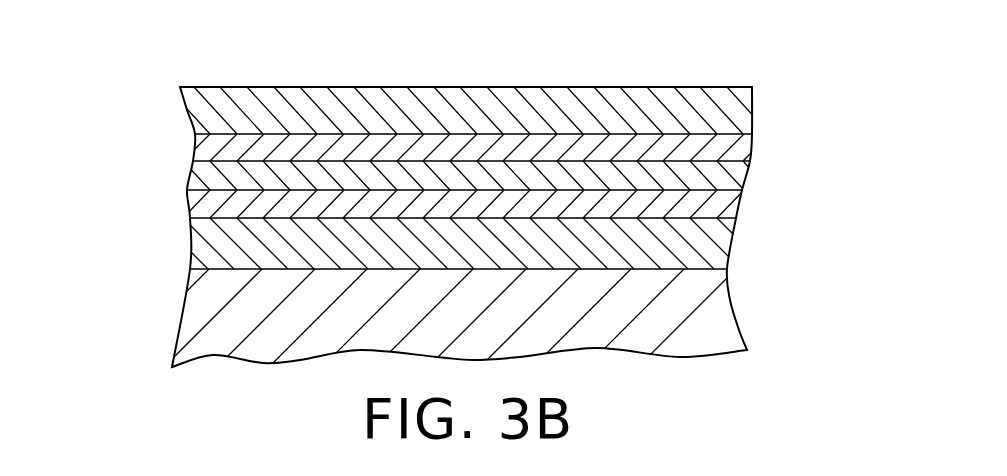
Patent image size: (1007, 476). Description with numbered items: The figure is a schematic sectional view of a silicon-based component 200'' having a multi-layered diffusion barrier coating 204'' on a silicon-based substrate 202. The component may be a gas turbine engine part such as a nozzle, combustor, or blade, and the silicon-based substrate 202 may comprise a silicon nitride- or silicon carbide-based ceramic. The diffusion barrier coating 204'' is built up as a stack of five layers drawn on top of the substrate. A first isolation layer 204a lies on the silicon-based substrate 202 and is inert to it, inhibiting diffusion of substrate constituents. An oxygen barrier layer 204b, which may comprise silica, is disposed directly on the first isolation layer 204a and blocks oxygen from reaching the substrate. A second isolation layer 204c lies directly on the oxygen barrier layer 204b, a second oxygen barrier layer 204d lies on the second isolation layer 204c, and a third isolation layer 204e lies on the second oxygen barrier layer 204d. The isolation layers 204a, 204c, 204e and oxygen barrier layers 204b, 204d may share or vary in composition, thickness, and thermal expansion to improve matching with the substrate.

The silicon-based component 200'' is at (498, 191).
The silicon-based substrate 202 is at (717, 303).
The multi-layered diffusion barrier coating 204'' is at (395, 178).
The first isolation layer 204a is at (712, 257).
The oxygen barrier layer 204b is at (717, 212).
The second isolation layer 204c is at (722, 175).
The second oxygen barrier layer 204d is at (737, 146).
The third isolation layer 204e is at (752, 89).